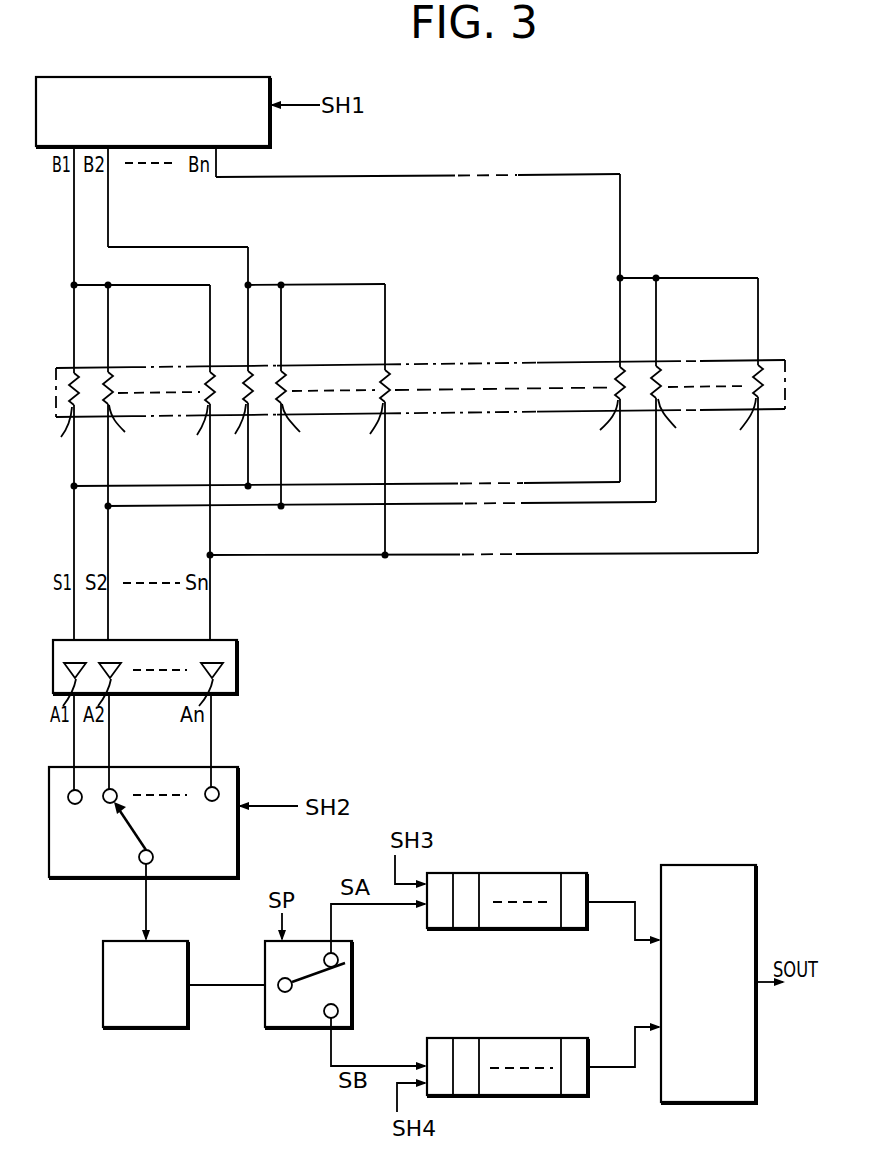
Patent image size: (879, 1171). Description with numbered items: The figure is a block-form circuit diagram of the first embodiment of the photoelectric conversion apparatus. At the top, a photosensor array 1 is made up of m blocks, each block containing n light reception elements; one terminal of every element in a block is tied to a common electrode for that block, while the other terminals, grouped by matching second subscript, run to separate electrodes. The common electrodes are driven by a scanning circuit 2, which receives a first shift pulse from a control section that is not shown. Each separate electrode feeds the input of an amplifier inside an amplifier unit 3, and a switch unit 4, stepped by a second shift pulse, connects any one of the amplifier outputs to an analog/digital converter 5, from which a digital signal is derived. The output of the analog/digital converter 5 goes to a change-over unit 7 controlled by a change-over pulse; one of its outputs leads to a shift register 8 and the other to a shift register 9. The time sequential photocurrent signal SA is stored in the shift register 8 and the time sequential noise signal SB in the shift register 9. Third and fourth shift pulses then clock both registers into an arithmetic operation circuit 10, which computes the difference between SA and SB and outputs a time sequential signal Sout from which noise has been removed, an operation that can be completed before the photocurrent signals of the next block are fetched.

The photosensor array 1 is at (56, 368).
The scanning circuit 2 is at (146, 77).
The amplifier unit 3 is at (62, 640).
The switch unit 4 is at (62, 767).
The analog/digital converter 5 is at (103, 985).
The change-over unit 7 is at (278, 1027).
The shift register 8 is at (516, 873).
The shift register 9 is at (518, 1095).
The arithmetic operation circuit 10 is at (703, 865).